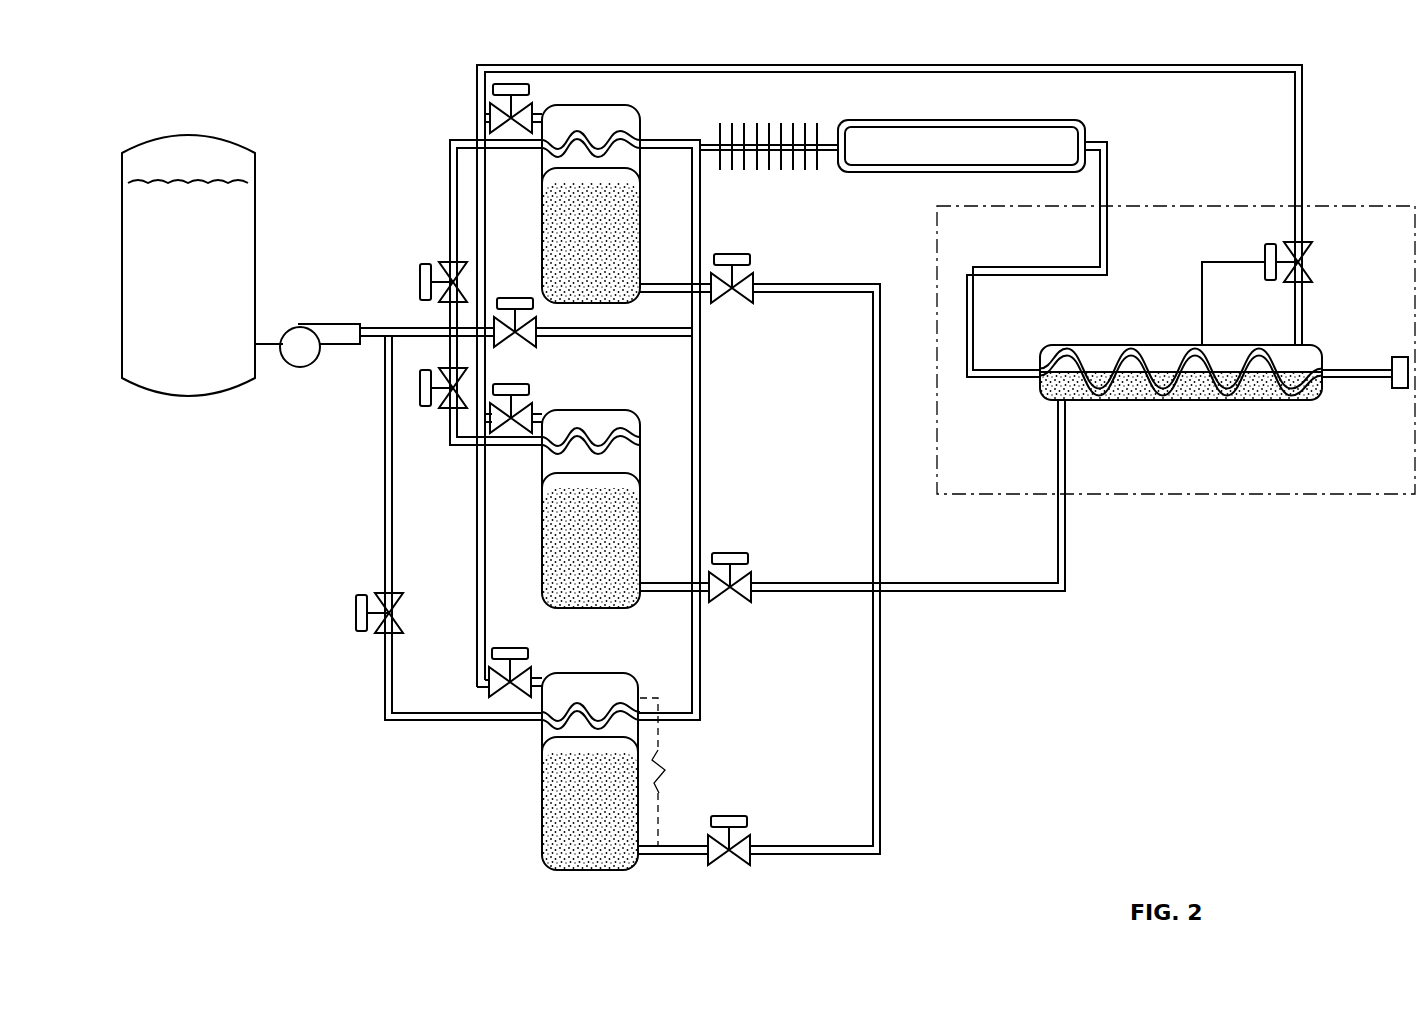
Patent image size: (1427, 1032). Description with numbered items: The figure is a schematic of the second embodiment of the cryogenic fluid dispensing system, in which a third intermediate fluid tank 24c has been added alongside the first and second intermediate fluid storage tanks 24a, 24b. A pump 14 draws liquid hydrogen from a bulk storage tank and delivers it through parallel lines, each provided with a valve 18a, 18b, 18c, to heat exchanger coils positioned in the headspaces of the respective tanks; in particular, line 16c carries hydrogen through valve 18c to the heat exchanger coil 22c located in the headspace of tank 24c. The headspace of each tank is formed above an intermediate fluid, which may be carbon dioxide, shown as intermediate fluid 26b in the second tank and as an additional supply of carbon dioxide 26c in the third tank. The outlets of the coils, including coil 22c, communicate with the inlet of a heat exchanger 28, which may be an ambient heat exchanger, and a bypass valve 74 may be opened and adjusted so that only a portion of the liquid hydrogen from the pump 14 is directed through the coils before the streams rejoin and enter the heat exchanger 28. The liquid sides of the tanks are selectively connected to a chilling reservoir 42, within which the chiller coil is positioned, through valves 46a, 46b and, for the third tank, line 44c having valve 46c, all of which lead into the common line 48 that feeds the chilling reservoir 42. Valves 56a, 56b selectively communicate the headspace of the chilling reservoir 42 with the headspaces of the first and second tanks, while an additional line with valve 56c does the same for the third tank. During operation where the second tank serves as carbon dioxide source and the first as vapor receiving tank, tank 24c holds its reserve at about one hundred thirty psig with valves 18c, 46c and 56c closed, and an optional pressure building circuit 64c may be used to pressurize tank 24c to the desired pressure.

The pump 14 is at (302, 366).
The line 16c is at (385, 480).
The valve 18a is at (425, 263).
The valve 18b is at (420, 386).
The valve 18c is at (355, 615).
The heat exchanger coil 22c is at (563, 731).
The intermediate fluid storage tank 24a is at (542, 241).
The intermediate fluid storage tank 24b is at (524, 545).
The intermediate fluid tank 24c is at (542, 807).
The intermediate fluid 26b is at (598, 610).
The intermediate fluid 26c is at (590, 872).
The heat exchanger 28 is at (795, 127).
The chilling reservoir 42 is at (1155, 345).
The line 44c is at (822, 856).
The valve 46a is at (752, 259).
The valve 46b is at (734, 552).
The valve 46c is at (733, 816).
The line 48 is at (990, 593).
The valve 56a is at (508, 84).
The valve 56b is at (507, 382).
The valve 56c is at (517, 684).
The pressure building circuit 64c is at (662, 768).
The bypass valve 74 is at (537, 340).